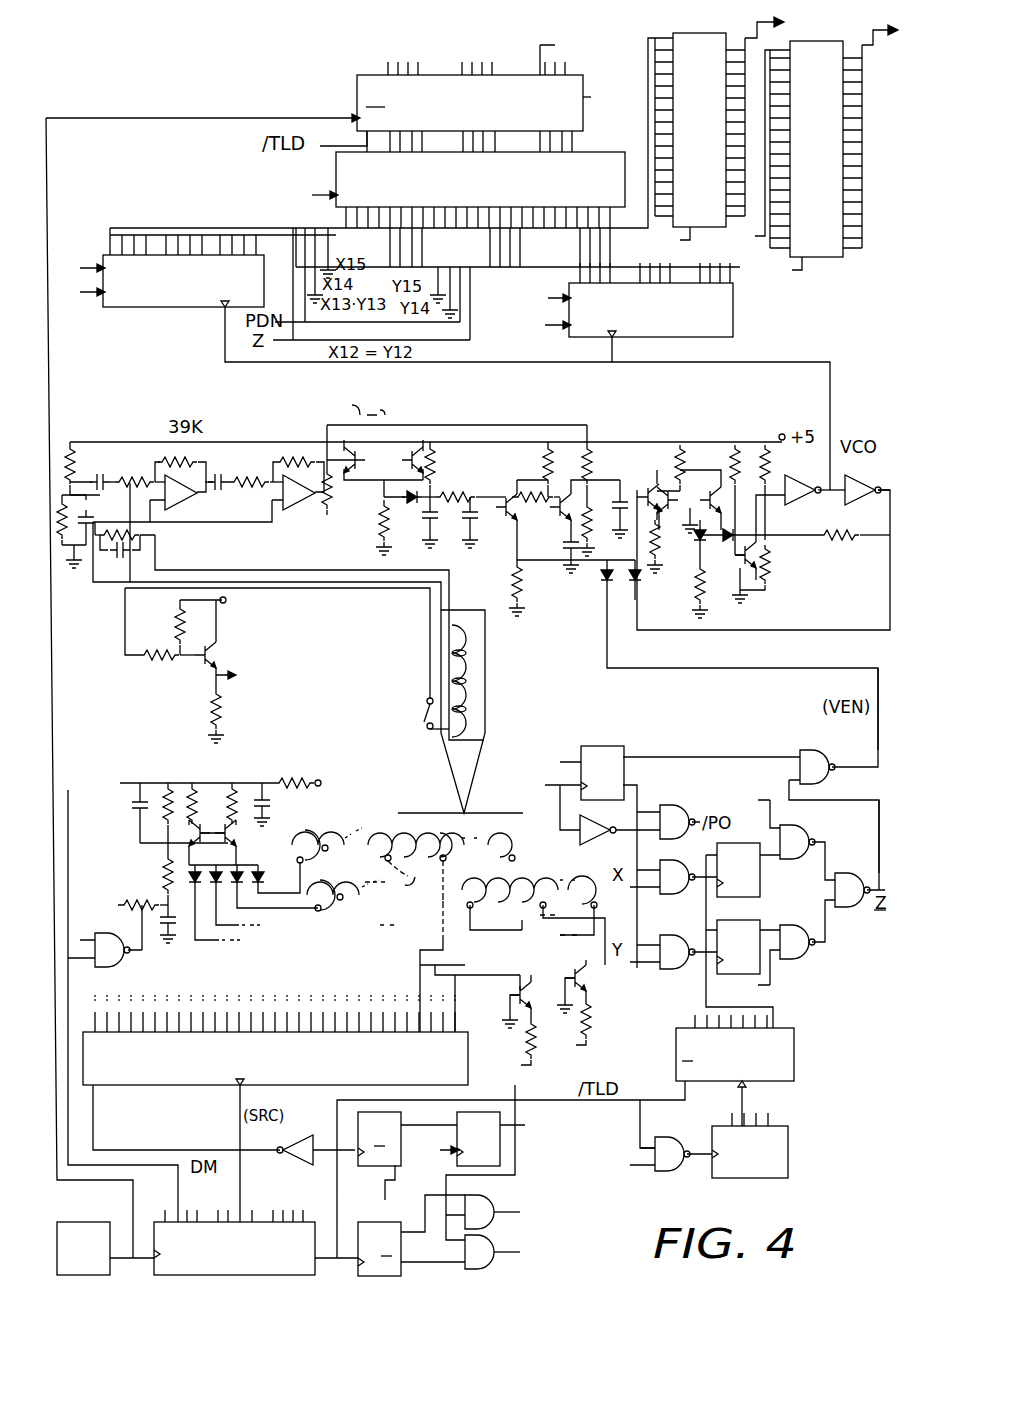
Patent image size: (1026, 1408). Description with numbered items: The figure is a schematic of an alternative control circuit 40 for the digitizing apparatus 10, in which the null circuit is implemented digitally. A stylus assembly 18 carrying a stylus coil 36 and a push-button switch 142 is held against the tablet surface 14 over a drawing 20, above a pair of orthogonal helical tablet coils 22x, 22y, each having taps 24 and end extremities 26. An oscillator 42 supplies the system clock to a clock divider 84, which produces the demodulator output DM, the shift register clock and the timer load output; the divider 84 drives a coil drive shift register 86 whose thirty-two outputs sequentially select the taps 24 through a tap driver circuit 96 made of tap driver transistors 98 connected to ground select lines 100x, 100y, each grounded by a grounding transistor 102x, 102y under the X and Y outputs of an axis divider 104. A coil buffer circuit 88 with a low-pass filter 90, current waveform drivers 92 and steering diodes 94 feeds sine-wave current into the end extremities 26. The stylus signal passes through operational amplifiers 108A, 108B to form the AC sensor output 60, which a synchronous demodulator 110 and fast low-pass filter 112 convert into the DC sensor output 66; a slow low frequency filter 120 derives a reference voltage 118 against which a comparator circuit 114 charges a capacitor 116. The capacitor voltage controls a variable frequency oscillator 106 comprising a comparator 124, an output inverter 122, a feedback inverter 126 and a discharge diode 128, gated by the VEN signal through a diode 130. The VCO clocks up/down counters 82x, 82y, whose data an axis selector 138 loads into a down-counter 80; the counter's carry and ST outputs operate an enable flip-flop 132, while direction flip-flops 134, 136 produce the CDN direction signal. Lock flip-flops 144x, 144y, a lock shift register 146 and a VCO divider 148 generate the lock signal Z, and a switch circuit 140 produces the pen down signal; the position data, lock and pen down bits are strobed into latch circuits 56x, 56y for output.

The apparatus 10 is at (568, 1267).
The tablet surface 14 is at (440, 805).
The stylus assembly 18 is at (500, 660).
The drawing 20 is at (301, 791).
The tablet coil 22x is at (345, 903).
The tablet coil 22y is at (304, 835).
The taps 24 is at (495, 886).
The end extremities 26 is at (589, 912).
The stylus coil 36 is at (490, 700).
The control circuit 40 is at (587, 1189).
The oscillator 42 is at (82, 1222).
The latch circuit 56x is at (724, 127).
The latch circuit 56y is at (823, 145).
The AC sensor output 60 is at (248, 526).
The DC sensor output 66 is at (482, 476).
The down-counter 80 is at (363, 96).
The up/down counter 82x is at (136, 307).
The up/down counter 82y is at (733, 322).
The clock divider 84 is at (153, 1223).
The coil drive shift register 86 is at (140, 1087).
The coil buffer circuit 88 is at (170, 750).
The low-pass filter 90 is at (158, 769).
The current waveform drivers 92 is at (212, 790).
The steering diodes 94 is at (256, 864).
The tap driver circuit 96 is at (442, 918).
The tap driver transistors 98 is at (442, 940).
The ground select line 100x is at (495, 960).
The ground select line 100y is at (512, 984).
The grounding transistor 102x is at (576, 982).
The grounding transistor 102y is at (524, 1022).
The axis divider 104 is at (393, 1195).
The variable frequency oscillator 106 is at (763, 556).
The operational amplifier 108A is at (195, 492).
The operational amplifier 108B is at (295, 512).
The synchronous demodulator 110 is at (350, 407).
The low-pass filter 112 is at (415, 542).
The comparator circuit 114 is at (500, 420).
The capacitor 116 is at (545, 585).
The reference voltage 118 is at (596, 470).
The low frequency filter 120 is at (575, 420).
The output inverter 122 is at (795, 505).
The comparator 124 is at (640, 420).
The feedback inverter 126 is at (870, 505).
The diode 128 is at (638, 585).
The diode 130 is at (598, 585).
The enable flip-flop 132 is at (602, 746).
The first direction flip-flop 134 is at (392, 1166).
The second direction flip-flop 136 is at (505, 1082).
The axis selector 138 is at (336, 178).
The switch circuit 140 is at (222, 640).
The push-button switch 142 is at (427, 716).
The lock flip-flop 144x is at (760, 878).
The lock flip-flop 144y is at (760, 918).
The lock shift register 146 is at (794, 1068).
The VCO divider 148 is at (788, 1158).